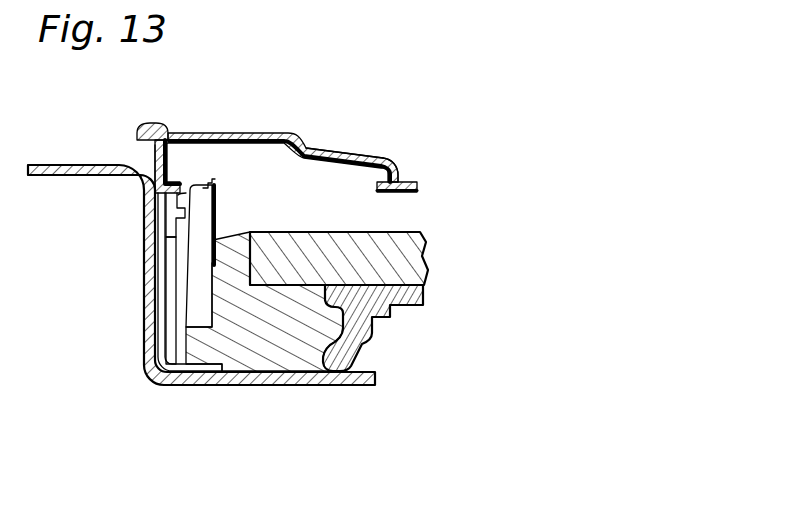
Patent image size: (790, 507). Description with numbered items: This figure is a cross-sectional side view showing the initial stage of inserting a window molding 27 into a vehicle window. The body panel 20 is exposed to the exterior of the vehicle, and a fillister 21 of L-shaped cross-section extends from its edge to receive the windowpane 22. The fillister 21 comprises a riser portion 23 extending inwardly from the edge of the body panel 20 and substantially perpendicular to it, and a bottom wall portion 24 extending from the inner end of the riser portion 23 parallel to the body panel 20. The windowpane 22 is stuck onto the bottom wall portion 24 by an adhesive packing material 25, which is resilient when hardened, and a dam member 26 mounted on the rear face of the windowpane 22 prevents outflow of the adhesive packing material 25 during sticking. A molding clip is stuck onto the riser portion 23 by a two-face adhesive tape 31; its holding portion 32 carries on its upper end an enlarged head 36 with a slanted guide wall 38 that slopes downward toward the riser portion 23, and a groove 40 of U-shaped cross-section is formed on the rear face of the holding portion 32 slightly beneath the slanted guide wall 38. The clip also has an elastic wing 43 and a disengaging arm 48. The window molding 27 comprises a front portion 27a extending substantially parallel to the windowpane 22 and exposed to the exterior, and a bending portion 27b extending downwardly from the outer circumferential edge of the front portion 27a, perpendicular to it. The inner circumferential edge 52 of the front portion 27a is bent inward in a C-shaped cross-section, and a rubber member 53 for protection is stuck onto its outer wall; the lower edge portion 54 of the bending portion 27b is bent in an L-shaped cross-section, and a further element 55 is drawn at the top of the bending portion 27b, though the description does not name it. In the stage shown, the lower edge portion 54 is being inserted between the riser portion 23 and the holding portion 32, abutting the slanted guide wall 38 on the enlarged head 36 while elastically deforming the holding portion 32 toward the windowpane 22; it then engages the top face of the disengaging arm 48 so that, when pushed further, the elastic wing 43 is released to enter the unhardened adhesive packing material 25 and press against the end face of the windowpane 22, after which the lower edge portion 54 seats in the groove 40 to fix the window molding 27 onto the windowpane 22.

The body panel 20 is at (66, 176).
The fillister 21 is at (141, 373).
The windowpane 22 is at (432, 281).
The riser portion 23 is at (150, 306).
The bottom wall portion 24 is at (243, 376).
The adhesive packing material 25 is at (297, 362).
The dam member 26 is at (360, 343).
The window molding 27 is at (278, 132).
The front portion 27a is at (324, 150).
The bending portion 27b is at (174, 164).
The two-face adhesive tape 31 is at (160, 344).
The holding portion 32 is at (176, 282).
The enlarged head 36 is at (216, 186).
The slanted guide wall 38 is at (178, 195).
The groove 40 is at (168, 218).
The elastic wing 43 is at (240, 236).
The disengaging arm 48 is at (200, 222).
The inner circumferential edge 52 is at (404, 164).
The rubber member 53 is at (416, 183).
The lower edge portion 54 is at (176, 150).
The bead 55 is at (148, 123).